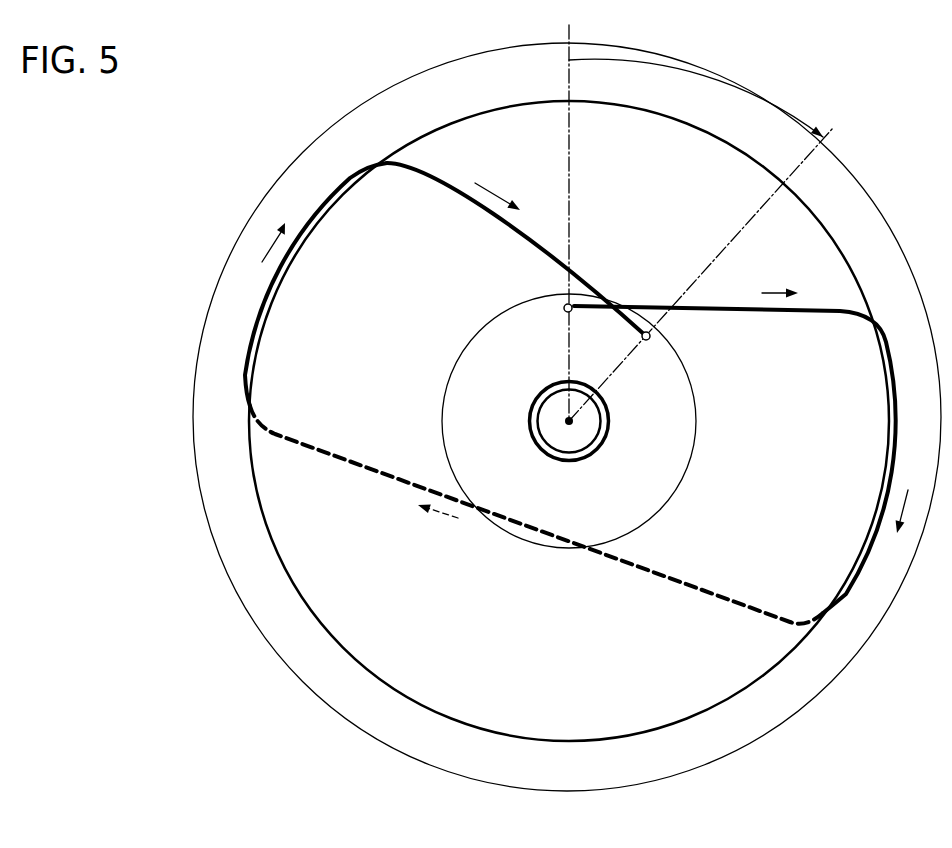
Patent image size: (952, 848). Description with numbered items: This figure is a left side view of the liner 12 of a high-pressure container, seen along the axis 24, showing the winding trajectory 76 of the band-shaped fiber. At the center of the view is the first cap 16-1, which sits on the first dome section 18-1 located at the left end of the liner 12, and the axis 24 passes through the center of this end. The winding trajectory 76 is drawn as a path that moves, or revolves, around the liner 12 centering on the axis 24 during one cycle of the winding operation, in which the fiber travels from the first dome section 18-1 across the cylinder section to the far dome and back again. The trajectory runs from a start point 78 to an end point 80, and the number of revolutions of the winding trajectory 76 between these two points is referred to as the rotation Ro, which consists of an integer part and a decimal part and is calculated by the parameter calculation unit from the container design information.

The liner 12 is at (83, 138).
The first dome section 18-1 is at (338, 583).
The first cap 16-1 is at (570, 462).
The axis 24 is at (565, 421).
The winding trajectory 76 is at (432, 175).
The start point 78 is at (564, 309).
The end point 80 is at (647, 341).
The rotation Ro is at (696, 86).